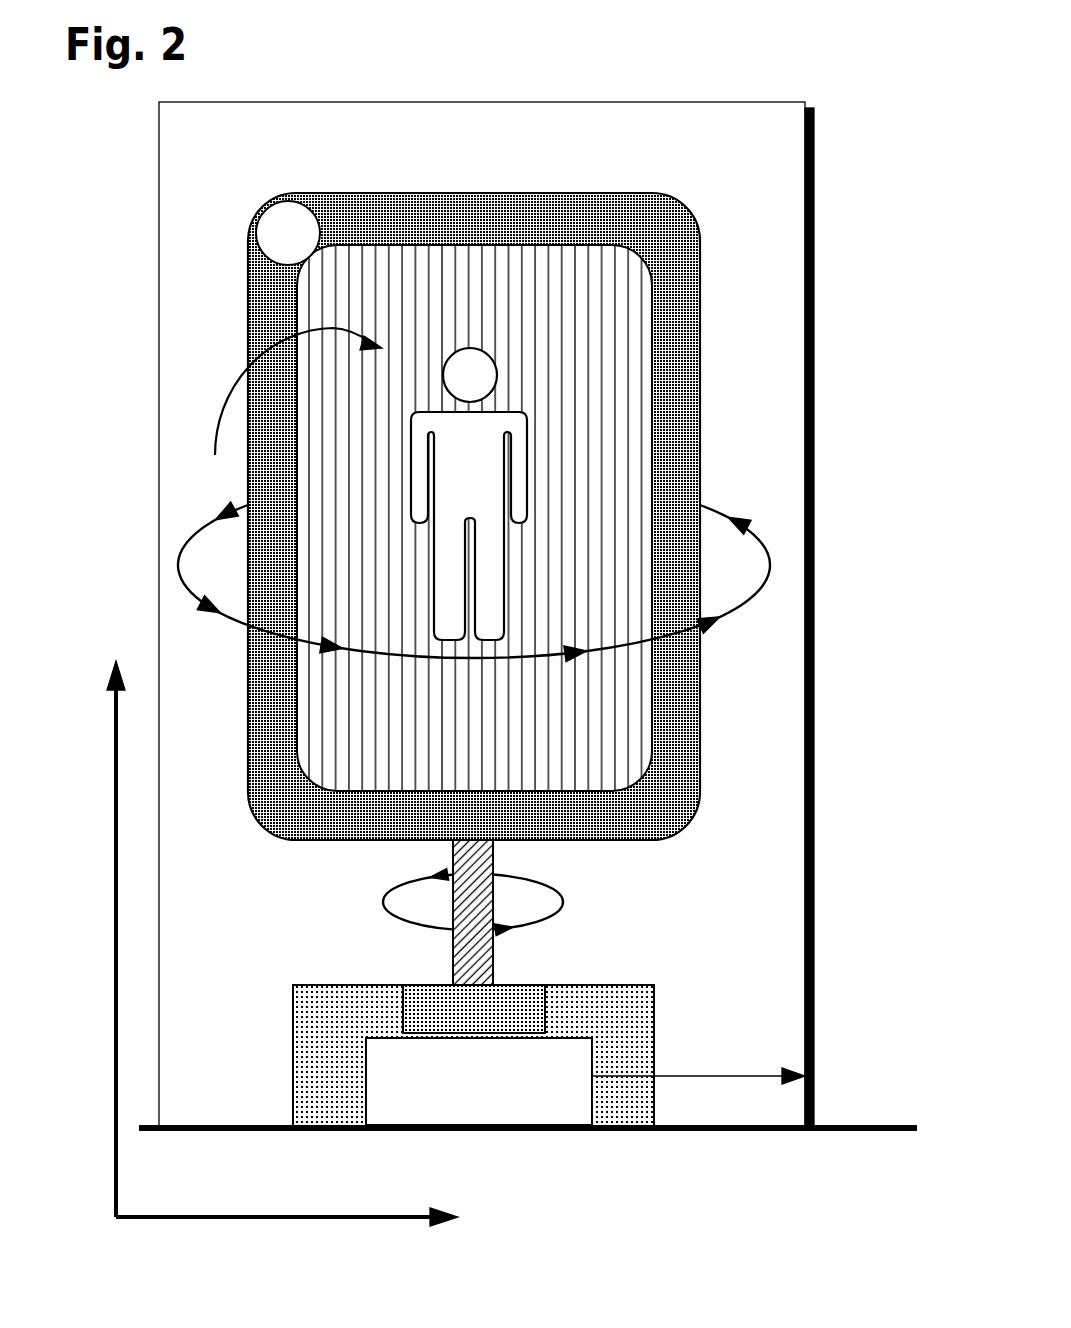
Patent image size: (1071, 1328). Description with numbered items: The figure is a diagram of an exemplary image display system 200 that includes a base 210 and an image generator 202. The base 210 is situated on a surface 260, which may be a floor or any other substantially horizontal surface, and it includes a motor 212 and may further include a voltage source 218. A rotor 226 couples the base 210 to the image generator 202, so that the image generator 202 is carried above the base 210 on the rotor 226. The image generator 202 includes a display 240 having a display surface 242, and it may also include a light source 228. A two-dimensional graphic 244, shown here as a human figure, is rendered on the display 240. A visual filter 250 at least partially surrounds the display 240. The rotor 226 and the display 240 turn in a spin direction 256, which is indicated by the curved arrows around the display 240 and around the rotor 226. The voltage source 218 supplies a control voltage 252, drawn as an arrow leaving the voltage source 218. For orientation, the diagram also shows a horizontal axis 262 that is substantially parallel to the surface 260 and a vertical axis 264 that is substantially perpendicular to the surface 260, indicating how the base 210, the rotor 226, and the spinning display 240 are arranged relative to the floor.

The display system 200 is at (876, 86).
The image generator 202 is at (444, 475).
The base 210 is at (473, 1027).
The motor 212 is at (474, 1009).
The voltage source 218 is at (479, 1081).
The rotor 226 is at (453, 965).
The light source 228 is at (288, 233).
The display 240 is at (625, 193).
The display surface 242 is at (285, 407).
The two-dimensional graphic 244 is at (525, 383).
The visual filter 250 is at (815, 447).
The control voltage 252 is at (732, 1074).
The spin direction 256 is at (754, 606).
The surface 260 is at (883, 1125).
The horizontal axis 262 is at (281, 1214).
The vertical axis 264 is at (113, 857).